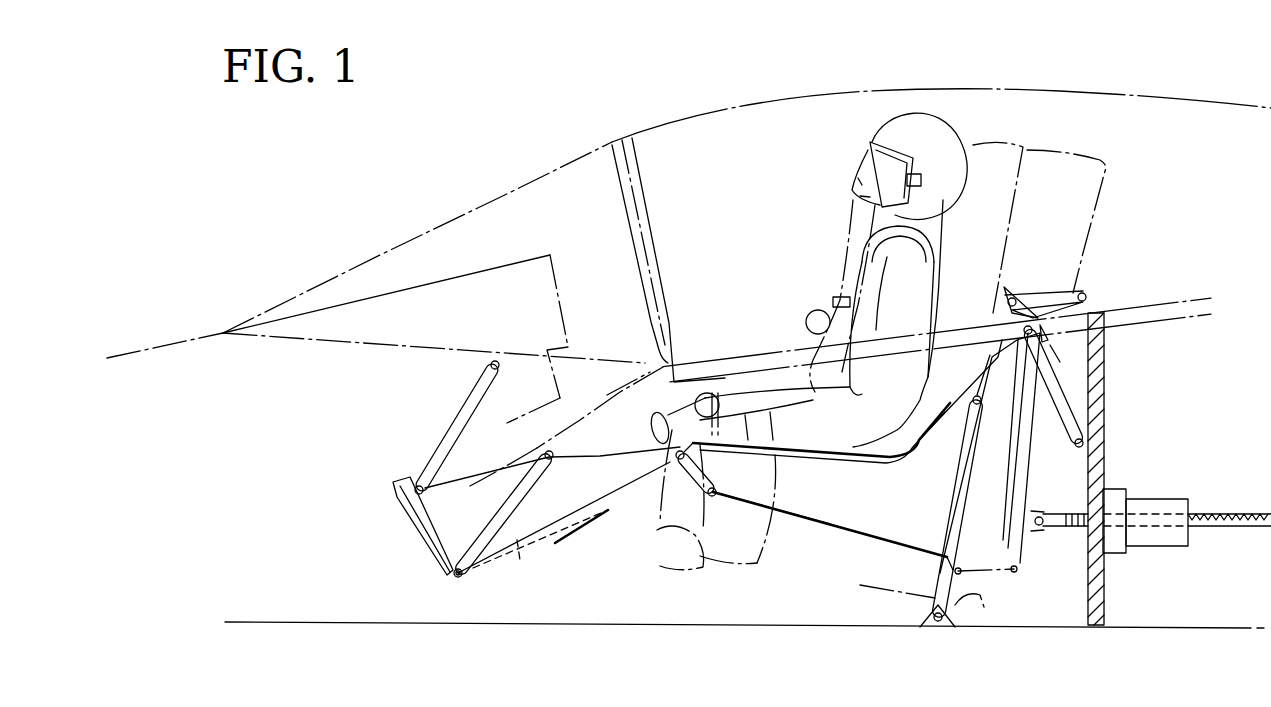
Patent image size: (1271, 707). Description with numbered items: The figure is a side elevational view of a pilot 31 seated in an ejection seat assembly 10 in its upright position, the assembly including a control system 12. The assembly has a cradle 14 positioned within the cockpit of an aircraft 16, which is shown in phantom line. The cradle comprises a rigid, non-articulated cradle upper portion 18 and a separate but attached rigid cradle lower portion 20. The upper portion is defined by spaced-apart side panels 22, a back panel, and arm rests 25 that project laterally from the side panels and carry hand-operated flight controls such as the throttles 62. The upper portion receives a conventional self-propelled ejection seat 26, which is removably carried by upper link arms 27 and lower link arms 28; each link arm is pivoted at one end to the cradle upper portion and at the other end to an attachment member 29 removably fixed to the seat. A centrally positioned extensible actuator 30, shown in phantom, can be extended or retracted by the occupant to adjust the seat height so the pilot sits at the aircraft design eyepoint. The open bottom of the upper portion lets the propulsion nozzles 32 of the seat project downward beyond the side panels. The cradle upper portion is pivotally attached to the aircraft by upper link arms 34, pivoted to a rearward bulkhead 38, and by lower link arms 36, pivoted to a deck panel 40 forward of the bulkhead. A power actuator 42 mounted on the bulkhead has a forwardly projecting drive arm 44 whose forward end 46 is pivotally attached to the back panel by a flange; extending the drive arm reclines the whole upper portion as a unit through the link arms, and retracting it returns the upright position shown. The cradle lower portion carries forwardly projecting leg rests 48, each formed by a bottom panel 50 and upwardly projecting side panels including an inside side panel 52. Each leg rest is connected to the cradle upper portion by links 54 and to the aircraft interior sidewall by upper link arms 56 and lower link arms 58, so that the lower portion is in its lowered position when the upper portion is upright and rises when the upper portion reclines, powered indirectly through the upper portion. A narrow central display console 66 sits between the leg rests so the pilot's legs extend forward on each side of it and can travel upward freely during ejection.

The ejection seat assembly 10 is at (1186, 146).
The control system 12 is at (1193, 559).
The cradle 14 is at (753, 564).
The aircraft 16 is at (515, 190).
The cradle upper portion 18 is at (849, 543).
The cradle lower portion 20 is at (557, 549).
The side panel 22 is at (865, 506).
The arm rest 25 is at (793, 463).
The ejection seat 26 is at (1085, 212).
The upper link arm 27 is at (1057, 290).
The lower link arm 28 is at (991, 573).
The attachment member 29 is at (1015, 299).
The extensible actuator 30 is at (1110, 341).
The pilot 31 is at (853, 273).
The propulsion nozzle 32 is at (673, 577).
The upper link arm 34 is at (1084, 403).
The lower link arm 36 is at (961, 467).
The rearward bulkhead 38 is at (1097, 427).
The deck panel 40 is at (774, 624).
The power actuator 42 is at (1144, 500).
The drive arm 44 is at (1074, 531).
The forward end 46 is at (1040, 516).
The leg rest 48 is at (450, 574).
The bottom panel 50 is at (520, 560).
The inside side panel 52 is at (571, 501).
The link 54 is at (706, 477).
The upper link arm 56 is at (463, 411).
The lower link arm 58 is at (483, 527).
The throttles 62 is at (718, 398).
The central display console 66 is at (493, 330).